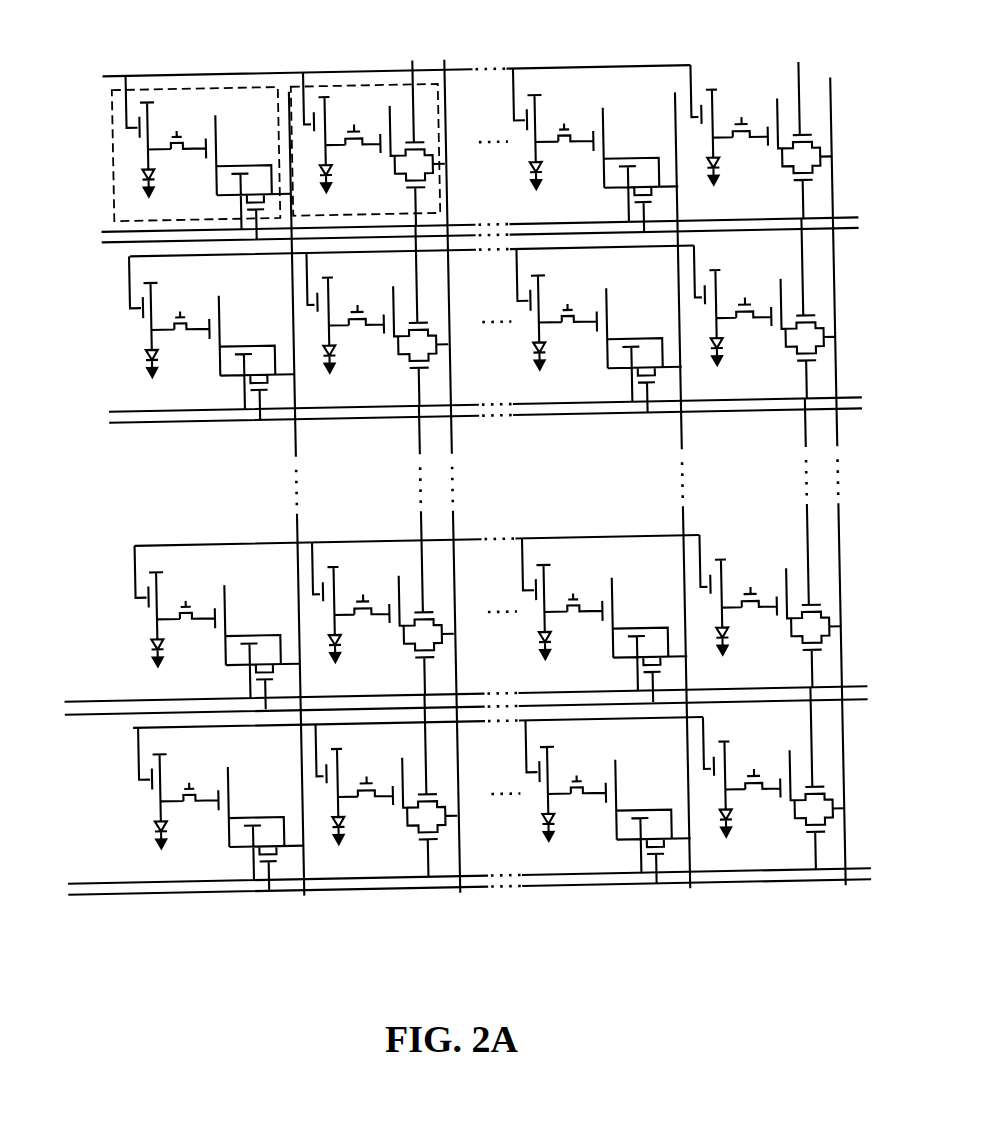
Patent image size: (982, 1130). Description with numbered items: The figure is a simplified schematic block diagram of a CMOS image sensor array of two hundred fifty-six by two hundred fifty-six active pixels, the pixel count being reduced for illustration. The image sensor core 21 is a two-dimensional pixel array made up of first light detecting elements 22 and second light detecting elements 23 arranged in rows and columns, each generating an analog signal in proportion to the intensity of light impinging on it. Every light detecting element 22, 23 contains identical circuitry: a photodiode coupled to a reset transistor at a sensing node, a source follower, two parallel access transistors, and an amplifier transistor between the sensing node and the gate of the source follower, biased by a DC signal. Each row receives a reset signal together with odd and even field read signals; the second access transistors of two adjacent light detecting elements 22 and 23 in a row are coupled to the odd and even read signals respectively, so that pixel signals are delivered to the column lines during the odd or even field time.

The image sensor core 21 is at (452, 509).
The first light detecting element 22 is at (257, 80).
The second light detecting element 23 is at (396, 83).